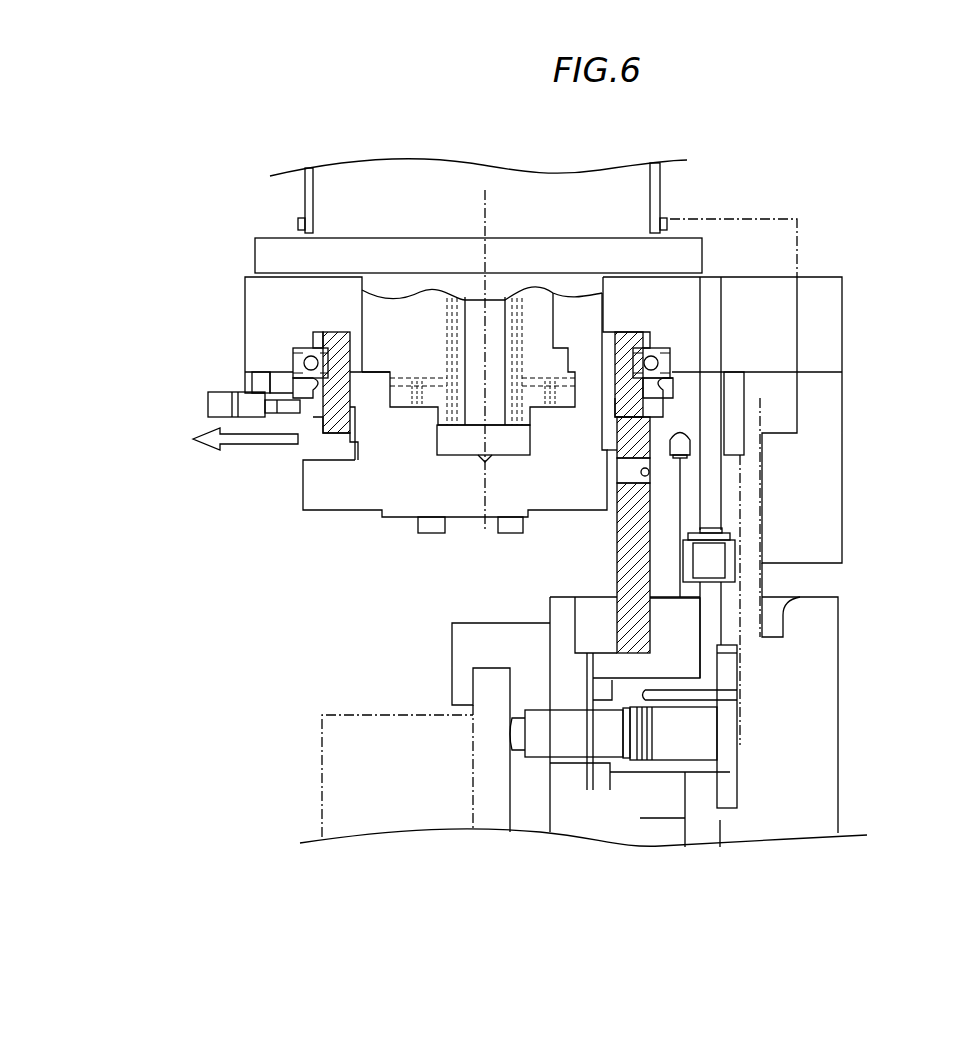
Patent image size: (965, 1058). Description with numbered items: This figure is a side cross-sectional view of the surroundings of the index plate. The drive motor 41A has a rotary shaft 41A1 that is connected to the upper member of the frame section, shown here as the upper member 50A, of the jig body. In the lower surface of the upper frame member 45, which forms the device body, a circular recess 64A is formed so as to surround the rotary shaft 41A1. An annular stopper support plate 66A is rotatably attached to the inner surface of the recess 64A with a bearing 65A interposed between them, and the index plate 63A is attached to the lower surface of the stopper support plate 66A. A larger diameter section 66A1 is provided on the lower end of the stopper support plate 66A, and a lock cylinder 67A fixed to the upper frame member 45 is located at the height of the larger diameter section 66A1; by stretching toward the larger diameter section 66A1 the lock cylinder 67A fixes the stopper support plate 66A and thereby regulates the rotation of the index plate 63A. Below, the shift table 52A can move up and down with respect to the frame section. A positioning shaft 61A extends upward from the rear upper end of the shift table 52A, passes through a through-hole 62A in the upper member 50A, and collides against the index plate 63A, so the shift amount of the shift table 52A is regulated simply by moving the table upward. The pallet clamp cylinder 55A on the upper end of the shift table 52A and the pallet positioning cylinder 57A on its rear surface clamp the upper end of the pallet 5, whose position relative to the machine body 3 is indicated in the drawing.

The drive motor 41A is at (347, 182).
The rotary shaft 41A1 is at (497, 435).
The upper frame member 45 is at (263, 328).
The stopper support plate 66A is at (325, 343).
The larger diameter section 66A1 is at (312, 419).
The bearing 65A is at (310, 347).
The circular recess 64A is at (293, 354).
The lock cylinder 67A is at (213, 402).
The frame section upper member 50A is at (322, 498).
The index plate 63A is at (663, 425).
The through-hole 62A is at (650, 460).
The positioning shaft 61A is at (652, 508).
The pallet clamp cylinder 55A is at (467, 643).
The pallet 5 is at (470, 735).
The machine body 3 is at (322, 788).
The shift table 52A is at (565, 823).
The pallet positioning cylinder 57A is at (695, 733).